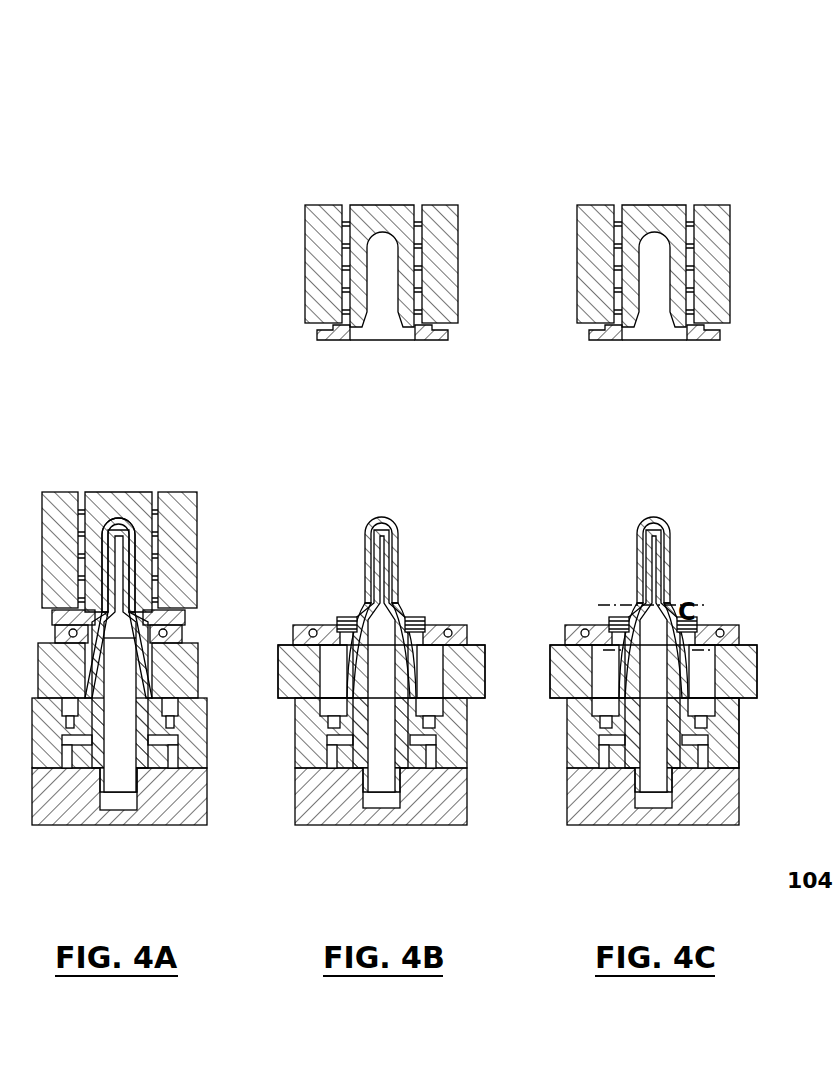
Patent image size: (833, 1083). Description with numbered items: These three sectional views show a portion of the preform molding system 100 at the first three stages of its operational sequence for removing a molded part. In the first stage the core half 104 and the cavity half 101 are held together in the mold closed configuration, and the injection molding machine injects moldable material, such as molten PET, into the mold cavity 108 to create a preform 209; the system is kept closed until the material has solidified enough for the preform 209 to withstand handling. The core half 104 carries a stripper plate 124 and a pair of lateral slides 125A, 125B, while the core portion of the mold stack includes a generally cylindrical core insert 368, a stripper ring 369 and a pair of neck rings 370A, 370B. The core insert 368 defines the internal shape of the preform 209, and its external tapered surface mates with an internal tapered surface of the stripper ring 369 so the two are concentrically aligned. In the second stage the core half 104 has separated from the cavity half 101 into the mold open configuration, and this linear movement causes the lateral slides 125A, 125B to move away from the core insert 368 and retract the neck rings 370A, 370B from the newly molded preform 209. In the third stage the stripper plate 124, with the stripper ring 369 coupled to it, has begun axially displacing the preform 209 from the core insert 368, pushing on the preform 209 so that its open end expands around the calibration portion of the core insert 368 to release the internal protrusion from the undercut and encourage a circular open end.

In FIG. 4A, the preform molding system 100 is at (212, 590).
In FIG. 4B, the preform molding system 100 is at (381, 346).
In FIG. 4C, the preform molding system 100 is at (653, 522).
In FIG. 4A, the cavity half 101 is at (207, 526).
In FIG. 4B, the cavity half 101 is at (355, 182).
In FIG. 4C, the cavity half 101 is at (653, 205).
In FIG. 4A, the core half 104 is at (213, 740).
In FIG. 4B, the core half 104 is at (286, 788).
In FIG. 4C, the core half 104 is at (614, 801).
In FIG. 4A, the mold cavity 108 is at (122, 530).
In FIG. 4C, the stripper plate 124 is at (769, 737).
In FIG. 4B, the lateral slide 125A is at (475, 655).
In FIG. 4C, the lateral slide 125A is at (733, 627).
In FIG. 4B, the lateral slide 125B is at (287, 655).
In FIG. 4C, the lateral slide 125B is at (570, 625).
In FIG. 4A, the preform 209 is at (101, 545).
In FIG. 4B, the preform 209 is at (395, 533).
In FIG. 4C, the preform 209 is at (691, 593).
In FIG. 4B, the core insert 368 is at (398, 723).
In FIG. 4C, the core insert 368 is at (720, 661).
In FIG. 4B, the stripper ring 369 is at (412, 662).
In FIG. 4C, the stripper ring 369 is at (712, 666).
In FIG. 4B, the neck ring 370A is at (434, 620).
In FIG. 4C, the neck ring 370A is at (736, 588).
In FIG. 4B, the neck ring 370B is at (335, 620).
In FIG. 4C, the neck ring 370B is at (567, 585).